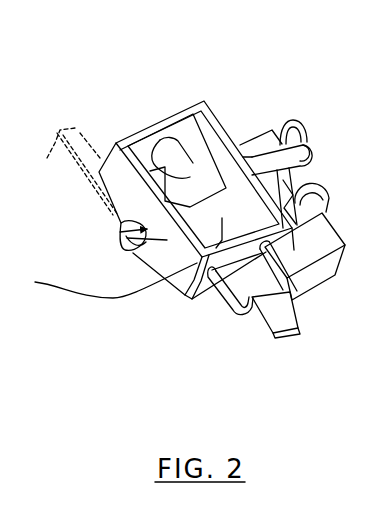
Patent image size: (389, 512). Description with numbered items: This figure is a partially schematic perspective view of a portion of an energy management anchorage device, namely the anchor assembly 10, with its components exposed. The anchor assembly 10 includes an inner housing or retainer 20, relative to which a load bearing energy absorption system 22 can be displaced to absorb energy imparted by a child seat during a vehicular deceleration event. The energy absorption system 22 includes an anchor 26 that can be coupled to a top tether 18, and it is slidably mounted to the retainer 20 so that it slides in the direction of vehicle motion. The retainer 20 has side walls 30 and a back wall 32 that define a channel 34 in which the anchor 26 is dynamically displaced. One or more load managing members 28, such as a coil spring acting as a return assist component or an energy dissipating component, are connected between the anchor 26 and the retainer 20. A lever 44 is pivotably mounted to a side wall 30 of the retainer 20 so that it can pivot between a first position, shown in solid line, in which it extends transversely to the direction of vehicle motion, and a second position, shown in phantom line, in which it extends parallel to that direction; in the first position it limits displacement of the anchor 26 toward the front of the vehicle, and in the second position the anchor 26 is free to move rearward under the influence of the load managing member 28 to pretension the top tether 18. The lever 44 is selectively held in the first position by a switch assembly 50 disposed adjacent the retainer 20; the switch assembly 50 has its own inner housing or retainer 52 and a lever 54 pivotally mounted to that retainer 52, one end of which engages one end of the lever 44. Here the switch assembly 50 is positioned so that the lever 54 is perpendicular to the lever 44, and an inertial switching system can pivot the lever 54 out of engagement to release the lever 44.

The anchor assembly 10 is at (133, 72).
The top tether 18 is at (272, 334).
The retainer 20 is at (110, 223).
The energy absorption system 22 is at (43, 318).
The anchor 26 is at (222, 300).
The load managing member 28 is at (153, 133).
The side walls 30 is at (232, 115).
The back wall 32 is at (152, 130).
The channel 34 is at (215, 130).
The lever 44 is at (312, 152).
The switch assembly 50 is at (330, 292).
The retainer 52 is at (308, 283).
The lever 54 is at (300, 130).